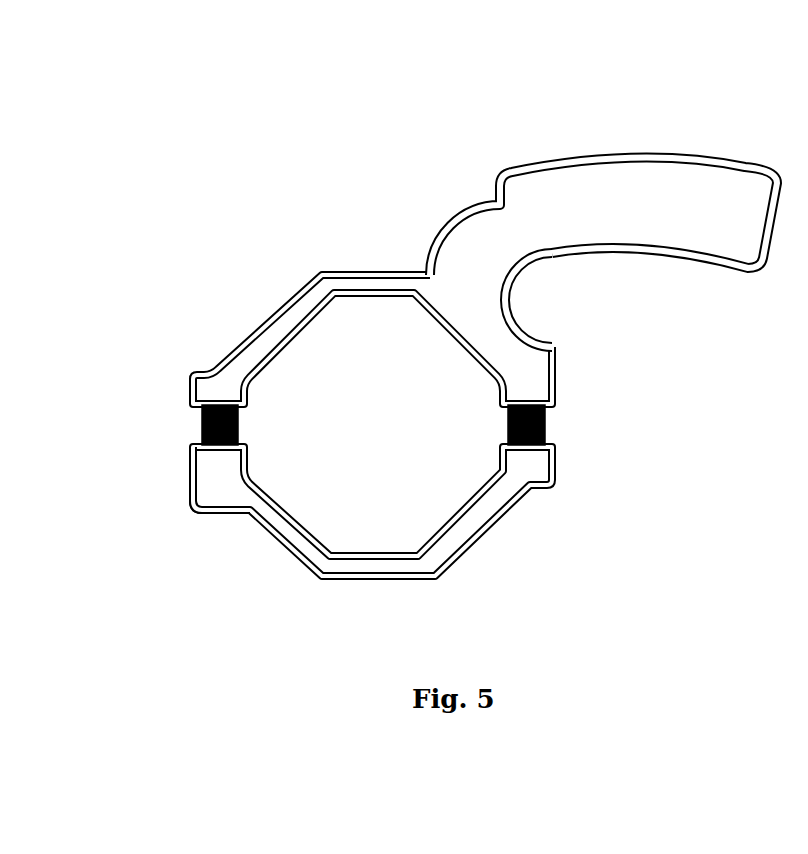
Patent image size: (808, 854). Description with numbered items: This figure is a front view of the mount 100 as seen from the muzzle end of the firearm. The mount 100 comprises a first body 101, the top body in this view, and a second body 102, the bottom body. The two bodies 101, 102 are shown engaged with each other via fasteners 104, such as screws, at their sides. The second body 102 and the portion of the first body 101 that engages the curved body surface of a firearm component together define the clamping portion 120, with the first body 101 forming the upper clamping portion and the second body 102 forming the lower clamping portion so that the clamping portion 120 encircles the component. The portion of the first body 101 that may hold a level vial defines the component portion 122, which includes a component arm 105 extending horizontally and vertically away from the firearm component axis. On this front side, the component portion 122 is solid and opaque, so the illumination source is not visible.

The mount 100 is at (377, 146).
The first body 101 is at (263, 303).
The second body 102 is at (287, 567).
The fasteners 104 is at (187, 418).
The component arm 105 is at (546, 293).
The clamping portion 120 is at (174, 556).
The component portion 122 is at (692, 99).